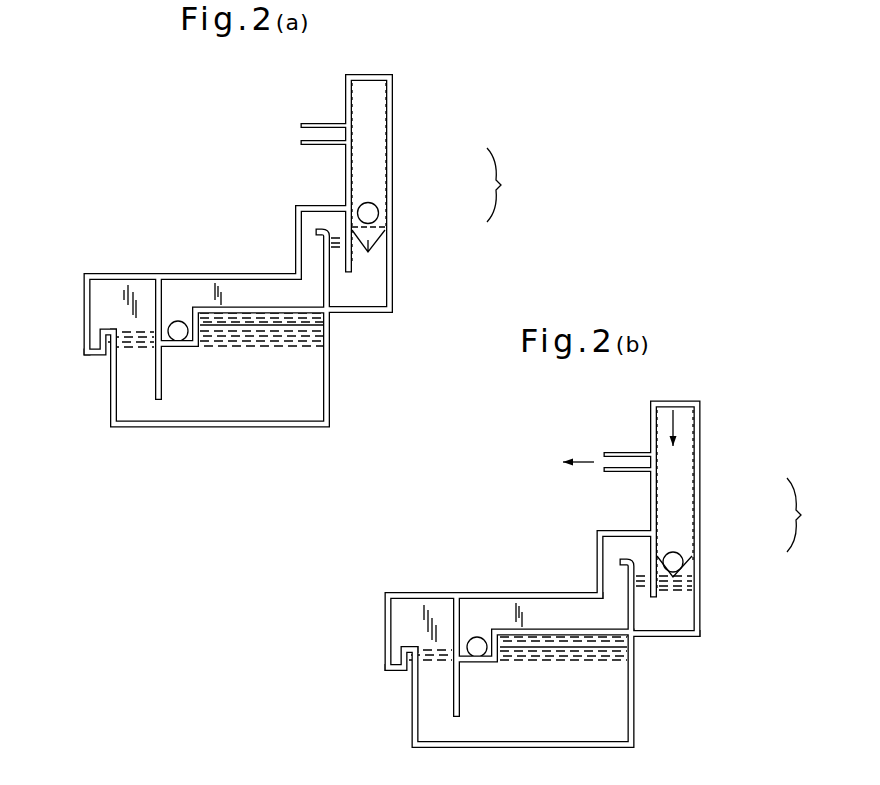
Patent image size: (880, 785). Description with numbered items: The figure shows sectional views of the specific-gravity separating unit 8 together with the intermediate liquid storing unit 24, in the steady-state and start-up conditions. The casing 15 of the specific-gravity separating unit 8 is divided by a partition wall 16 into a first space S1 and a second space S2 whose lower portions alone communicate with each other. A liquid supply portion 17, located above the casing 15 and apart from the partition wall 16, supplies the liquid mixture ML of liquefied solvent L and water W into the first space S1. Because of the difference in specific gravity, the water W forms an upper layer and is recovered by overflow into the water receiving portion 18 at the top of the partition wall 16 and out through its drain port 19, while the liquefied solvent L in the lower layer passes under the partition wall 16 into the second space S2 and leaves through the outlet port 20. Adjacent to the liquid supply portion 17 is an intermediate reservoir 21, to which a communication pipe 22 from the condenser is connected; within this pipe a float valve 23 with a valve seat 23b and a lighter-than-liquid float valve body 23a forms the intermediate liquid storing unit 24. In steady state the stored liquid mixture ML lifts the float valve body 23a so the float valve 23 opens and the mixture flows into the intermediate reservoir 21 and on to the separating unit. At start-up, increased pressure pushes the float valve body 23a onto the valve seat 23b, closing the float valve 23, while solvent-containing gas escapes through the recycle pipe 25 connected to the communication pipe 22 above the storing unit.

In FIG. 2A, the specific-gravity separating unit 8 is at (147, 187).
In FIG. 2B, the specific-gravity separating unit 8 is at (503, 505).
In FIG. 2A, the casing 15 is at (331, 394).
In FIG. 2B, the casing 15 is at (636, 714).
In FIG. 2A, the partition wall 16 is at (160, 298).
In FIG. 2B, the partition wall 16 is at (458, 620).
In FIG. 2A, the liquid supply portion 17 is at (310, 228).
In FIG. 2B, the liquid supply portion 17 is at (616, 553).
In FIG. 2A, the water receiving portion 18 is at (183, 303).
In FIG. 2B, the water receiving portion 18 is at (489, 610).
In FIG. 2A, the drain port 19 is at (173, 322).
In FIG. 2B, the drain port 19 is at (473, 638).
In FIG. 2A, the outlet port 20 is at (92, 358).
In FIG. 2B, the outlet port 20 is at (395, 673).
In FIG. 2A, the intermediate reservoir 21 is at (377, 317).
In FIG. 2B, the intermediate reservoir 21 is at (668, 636).
In FIG. 2A, the communication pipe 22 is at (395, 92).
In FIG. 2B, the communication pipe 22 is at (700, 422).
In FIG. 2A, the float valve 23 is at (510, 185).
In FIG. 2B, the float valve 23 is at (810, 515).
In FIG. 2A, the float valve body 23a is at (379, 206).
In FIG. 2B, the float valve body 23a is at (686, 550).
In FIG. 2A, the valve seat 23b is at (388, 243).
In FIG. 2B, the valve seat 23b is at (697, 572).
In FIG. 2A, the intermediate liquid storing unit 24 is at (367, 190).
In FIG. 2B, the intermediate liquid storing unit 24 is at (675, 526).
In FIG. 2A, the recycle pipe 25 is at (316, 122).
In FIG. 2B, the recycle pipe 25 is at (618, 452).
In FIG. 2A, the first space S1 is at (242, 303).
In FIG. 2B, the first space S1 is at (532, 612).
In FIG. 2A, the second space S2 is at (106, 306).
In FIG. 2B, the second space S2 is at (406, 623).
In FIG. 2A, the water W is at (273, 308).
In FIG. 2B, the water W is at (556, 630).
In FIG. 2A, the liquefied solvent L is at (237, 402).
In FIG. 2B, the liquefied solvent L is at (555, 718).
In FIG. 2A, the liquid mixture ML is at (356, 244).
In FIG. 2B, the liquid mixture ML is at (664, 583).